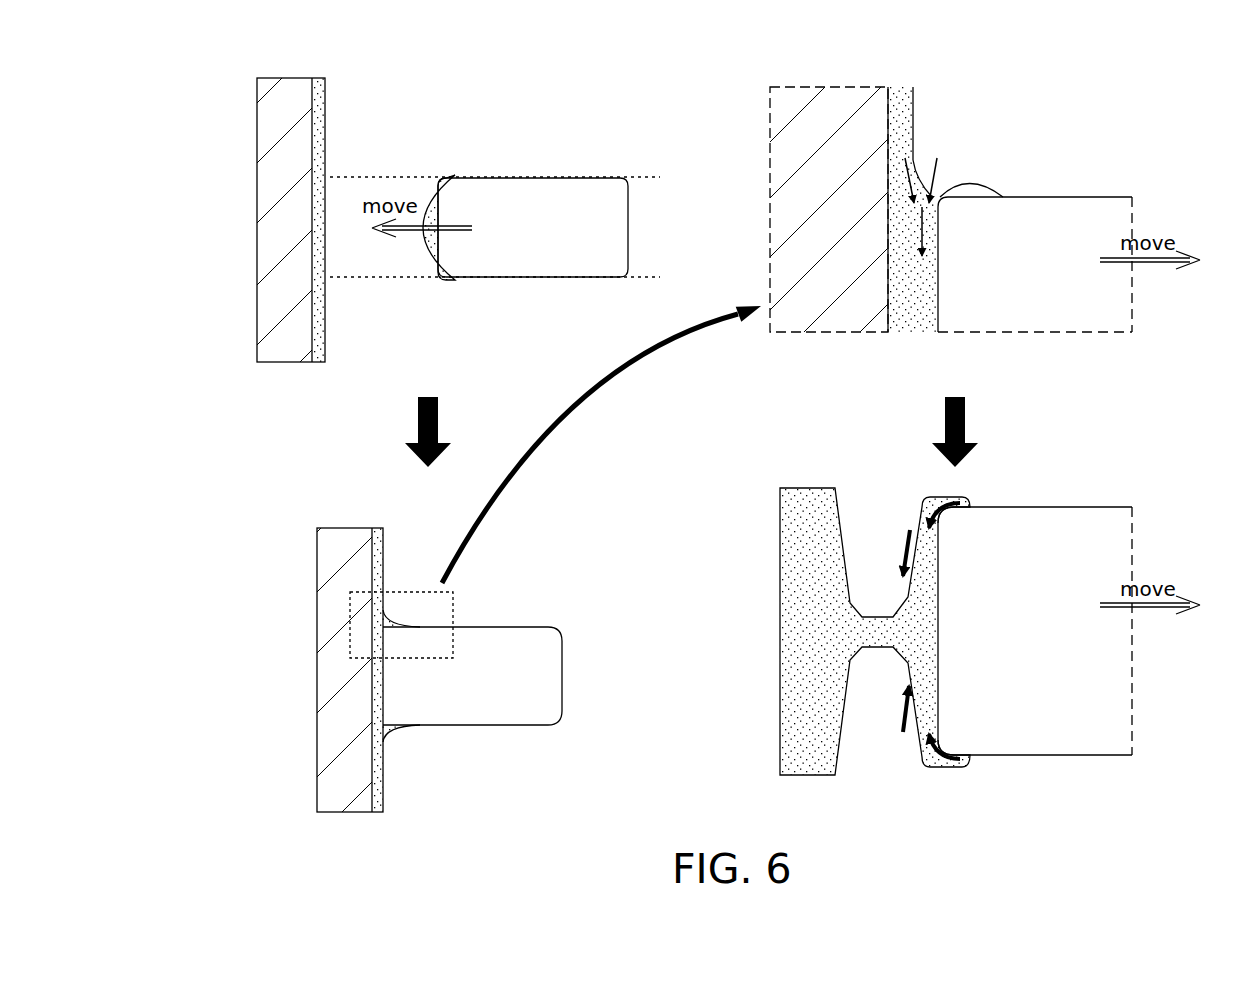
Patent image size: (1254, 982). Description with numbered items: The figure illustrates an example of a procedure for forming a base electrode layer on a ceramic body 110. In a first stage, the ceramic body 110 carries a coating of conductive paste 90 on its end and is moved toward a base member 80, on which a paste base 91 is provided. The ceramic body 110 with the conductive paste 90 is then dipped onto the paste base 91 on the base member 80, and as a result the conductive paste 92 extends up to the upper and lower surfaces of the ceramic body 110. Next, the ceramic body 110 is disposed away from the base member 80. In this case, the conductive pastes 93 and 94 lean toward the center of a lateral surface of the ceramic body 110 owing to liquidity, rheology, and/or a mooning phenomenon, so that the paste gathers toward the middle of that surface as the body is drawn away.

The base member 80 is at (257, 107).
The conductive paste 90 is at (447, 176).
The paste base 91 is at (327, 107).
The conductive paste 92 is at (387, 619).
The conductive paste 93 is at (902, 103).
The conductive paste 94 is at (920, 508).
The ceramic body 110 is at (530, 183).